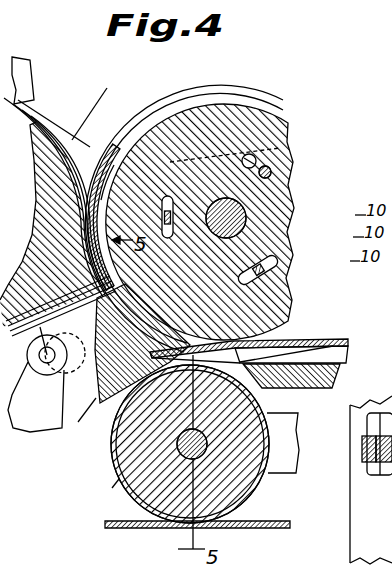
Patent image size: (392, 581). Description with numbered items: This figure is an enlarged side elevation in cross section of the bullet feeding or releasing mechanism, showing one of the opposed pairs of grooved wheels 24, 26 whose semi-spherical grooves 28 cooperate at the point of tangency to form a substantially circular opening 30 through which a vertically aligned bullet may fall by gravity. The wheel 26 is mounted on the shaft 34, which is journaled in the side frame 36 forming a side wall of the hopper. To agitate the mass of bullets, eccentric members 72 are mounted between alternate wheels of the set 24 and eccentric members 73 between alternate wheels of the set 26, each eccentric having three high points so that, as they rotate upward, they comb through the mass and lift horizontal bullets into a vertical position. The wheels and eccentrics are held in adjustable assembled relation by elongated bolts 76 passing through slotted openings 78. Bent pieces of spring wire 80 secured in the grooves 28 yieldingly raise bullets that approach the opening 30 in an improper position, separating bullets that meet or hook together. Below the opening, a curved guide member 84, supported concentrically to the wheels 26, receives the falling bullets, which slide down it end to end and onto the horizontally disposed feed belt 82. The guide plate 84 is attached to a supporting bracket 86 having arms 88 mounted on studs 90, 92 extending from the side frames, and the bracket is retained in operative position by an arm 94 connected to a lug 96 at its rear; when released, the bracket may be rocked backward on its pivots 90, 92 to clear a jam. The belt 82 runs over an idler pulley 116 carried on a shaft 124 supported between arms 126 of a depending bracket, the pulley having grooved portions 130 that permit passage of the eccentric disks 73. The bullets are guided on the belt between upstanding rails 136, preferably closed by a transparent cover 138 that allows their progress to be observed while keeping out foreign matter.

The grooved wheel 24 is at (66, 108).
The grooved wheel 26 is at (255, 114).
The groove 28 is at (163, 113).
The circular opening 30 is at (125, 160).
The shaft 34 is at (248, 218).
The side frame 36 is at (350, 551).
The eccentric member 72 is at (35, 65).
The eccentric member 73 is at (228, 86).
The elongated bolt 76 is at (256, 161).
The slotted opening 78 is at (272, 174).
The spring wire 80 is at (46, 240).
The feed belt 82 is at (297, 346).
The guide member 84 is at (58, 344).
The supporting bracket 86 is at (92, 432).
The arm 88 is at (391, 388).
The stud 90 is at (362, 452).
The stud 92 is at (112, 488).
The arm 94 is at (12, 420).
The lug 96 is at (82, 422).
The idler pulley 116 is at (236, 480).
The shaft 124 is at (160, 524).
The arm 126 is at (271, 478).
The grooved portion 130 is at (342, 374).
The rail 136 is at (349, 362).
The transparent cover 138 is at (324, 343).